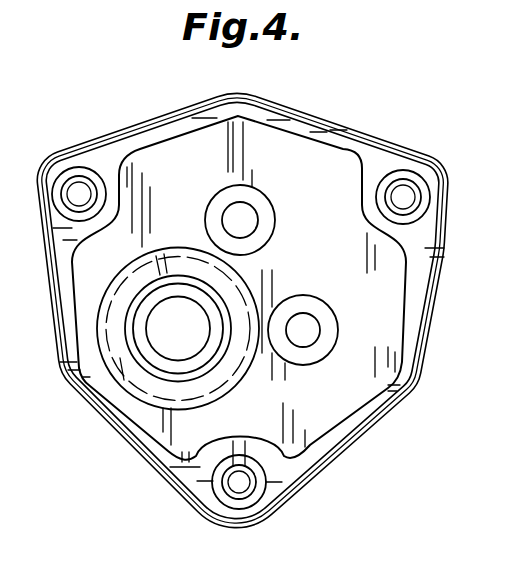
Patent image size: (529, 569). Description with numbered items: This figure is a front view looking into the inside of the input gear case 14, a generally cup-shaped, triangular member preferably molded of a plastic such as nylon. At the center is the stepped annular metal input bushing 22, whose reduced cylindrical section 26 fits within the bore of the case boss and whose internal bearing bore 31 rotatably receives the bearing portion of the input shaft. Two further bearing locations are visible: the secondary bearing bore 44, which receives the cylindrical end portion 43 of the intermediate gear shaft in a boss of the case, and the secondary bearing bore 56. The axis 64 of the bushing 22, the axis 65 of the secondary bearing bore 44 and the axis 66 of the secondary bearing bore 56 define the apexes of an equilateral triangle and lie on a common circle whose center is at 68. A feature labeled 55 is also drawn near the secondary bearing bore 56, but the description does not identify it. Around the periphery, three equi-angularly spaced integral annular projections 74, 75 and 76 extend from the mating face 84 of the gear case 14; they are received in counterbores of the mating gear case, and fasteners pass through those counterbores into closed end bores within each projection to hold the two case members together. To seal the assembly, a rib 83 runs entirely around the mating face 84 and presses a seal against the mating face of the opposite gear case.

The input gear case 14 is at (242, 292).
The input bushing 22 is at (188, 374).
The reduced cylindrical section 26 is at (96, 400).
The internal bearing bore 31 is at (180, 297).
The cylindrical end portion 43 is at (232, 218).
The secondary bearing bore 44 is at (257, 227).
The outlet port 55 is at (310, 332).
The secondary bearing bore 56 is at (305, 318).
The axis of bushing 64 is at (178, 328).
The axis of secondary bearing bore 65 is at (243, 217).
The axis of secondary bearing bore 66 is at (303, 330).
The center 68 is at (237, 290).
The annular projection 74 is at (78, 168).
The annular projection 75 is at (405, 172).
The annular projection 76 is at (226, 504).
The rib 83 is at (152, 464).
The mating face 84 is at (279, 481).